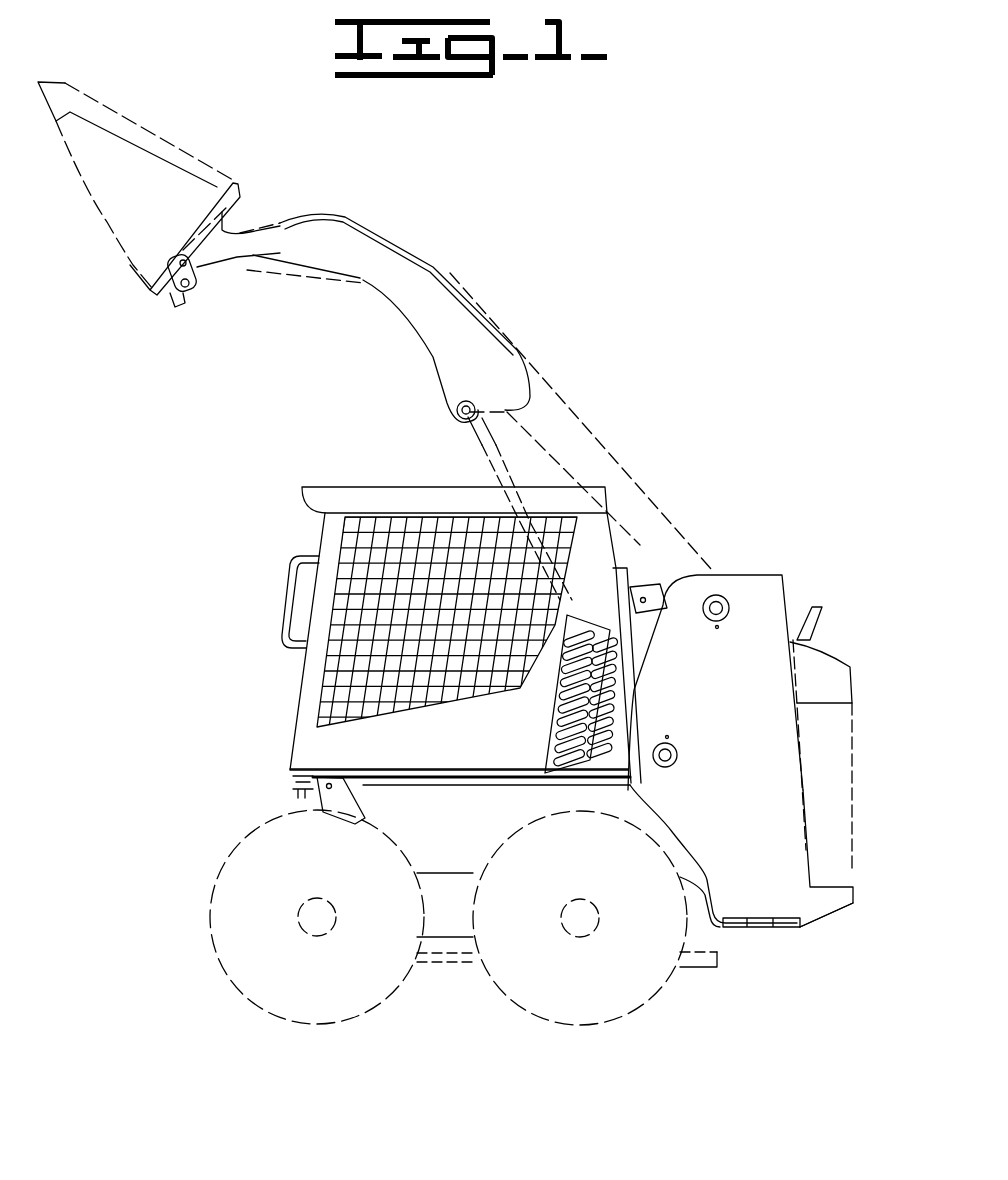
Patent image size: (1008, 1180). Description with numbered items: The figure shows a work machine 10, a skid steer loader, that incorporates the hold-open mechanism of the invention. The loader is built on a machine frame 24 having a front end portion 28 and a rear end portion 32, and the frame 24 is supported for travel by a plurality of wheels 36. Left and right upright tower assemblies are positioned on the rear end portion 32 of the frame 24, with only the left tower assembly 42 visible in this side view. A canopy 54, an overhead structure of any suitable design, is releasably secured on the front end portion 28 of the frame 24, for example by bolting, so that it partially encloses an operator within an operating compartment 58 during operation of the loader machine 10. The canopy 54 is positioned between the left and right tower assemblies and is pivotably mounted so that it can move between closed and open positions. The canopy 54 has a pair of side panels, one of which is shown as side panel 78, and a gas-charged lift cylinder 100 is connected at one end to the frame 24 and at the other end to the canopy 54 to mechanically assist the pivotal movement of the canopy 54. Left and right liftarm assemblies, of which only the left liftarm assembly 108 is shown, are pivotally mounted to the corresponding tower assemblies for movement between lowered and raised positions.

The work machine 10 is at (697, 512).
The left liftarm assembly 108 is at (480, 310).
The canopy 54 is at (347, 486).
The operating compartment 58 is at (473, 613).
The side panel 78 is at (421, 757).
The gas-charged lift cylinder 100 is at (553, 690).
The left tower assembly 42 is at (790, 593).
The front end portion 28 is at (377, 795).
The wheels 36 is at (210, 922).
The rear end portion 32 is at (782, 932).
The machine frame 24 is at (448, 850).